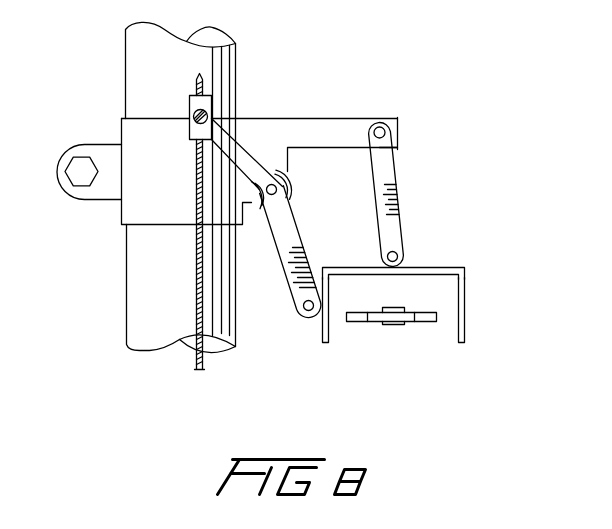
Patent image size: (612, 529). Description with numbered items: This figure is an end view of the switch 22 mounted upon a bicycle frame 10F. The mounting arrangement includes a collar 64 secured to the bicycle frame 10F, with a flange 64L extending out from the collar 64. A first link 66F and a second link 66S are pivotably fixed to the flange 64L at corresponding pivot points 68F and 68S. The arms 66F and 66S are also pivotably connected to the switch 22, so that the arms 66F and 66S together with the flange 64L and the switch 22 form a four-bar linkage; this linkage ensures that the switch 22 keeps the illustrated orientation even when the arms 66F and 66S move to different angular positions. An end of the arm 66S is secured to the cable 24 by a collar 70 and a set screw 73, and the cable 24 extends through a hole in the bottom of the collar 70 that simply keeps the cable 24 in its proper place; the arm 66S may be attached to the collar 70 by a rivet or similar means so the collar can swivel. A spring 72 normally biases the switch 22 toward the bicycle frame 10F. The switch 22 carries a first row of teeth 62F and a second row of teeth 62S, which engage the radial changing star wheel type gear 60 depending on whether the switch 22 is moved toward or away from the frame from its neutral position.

The bicycle frame 10F is at (237, 60).
The collar 70 is at (190, 102).
The set screw 73 is at (190, 116).
The cable 24 is at (196, 204).
The collar 64 is at (283, 119).
The flange 64L is at (386, 124).
The pivot point 68F is at (386, 133).
The first link 66F is at (398, 161).
The pivot point 68S is at (278, 192).
The spring 72 is at (257, 208).
The second link 66S is at (292, 285).
The switch 22 is at (446, 267).
The second row of teeth 62S is at (327, 344).
The first row of teeth 62F is at (463, 344).
The star wheel 60 is at (415, 323).